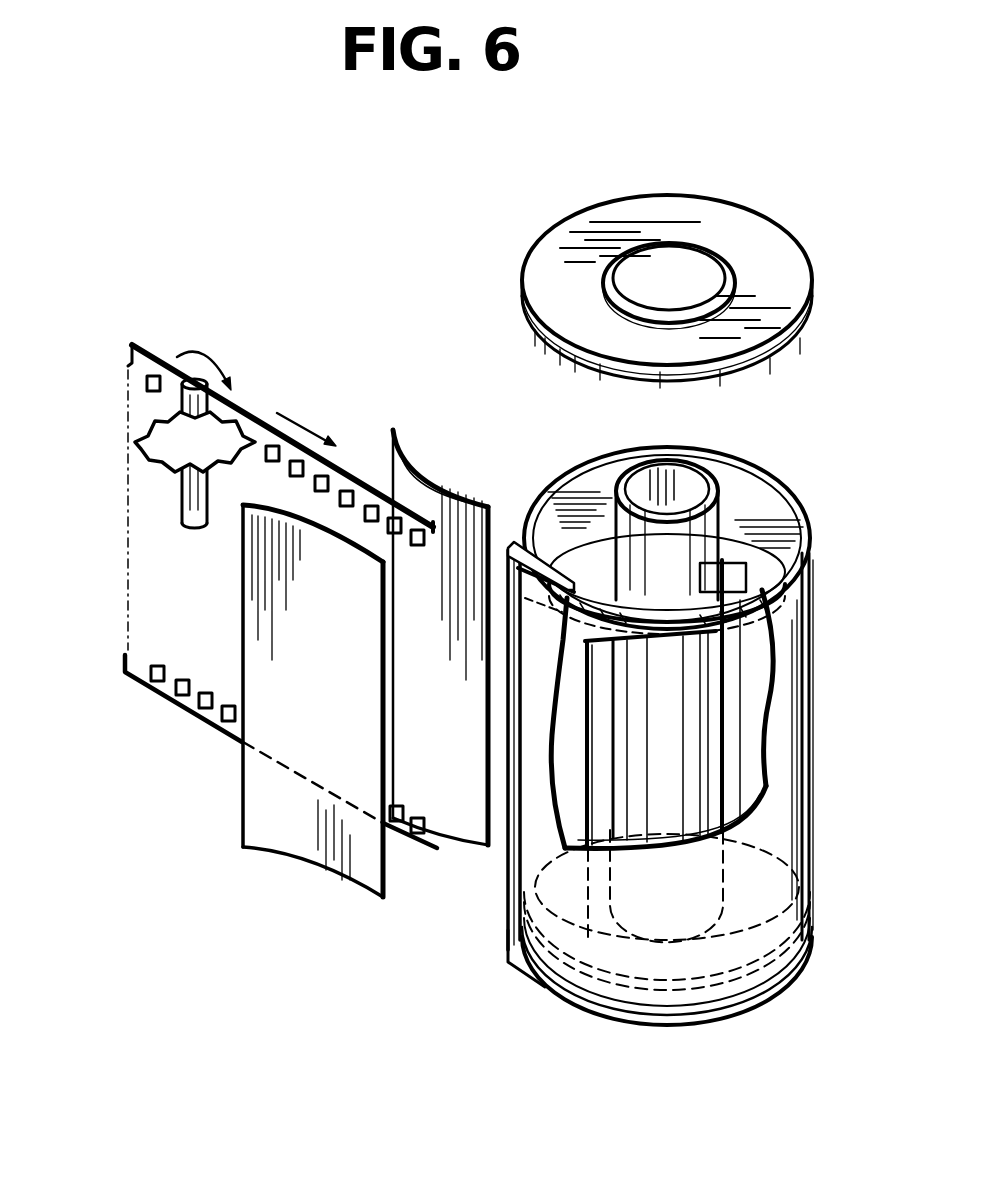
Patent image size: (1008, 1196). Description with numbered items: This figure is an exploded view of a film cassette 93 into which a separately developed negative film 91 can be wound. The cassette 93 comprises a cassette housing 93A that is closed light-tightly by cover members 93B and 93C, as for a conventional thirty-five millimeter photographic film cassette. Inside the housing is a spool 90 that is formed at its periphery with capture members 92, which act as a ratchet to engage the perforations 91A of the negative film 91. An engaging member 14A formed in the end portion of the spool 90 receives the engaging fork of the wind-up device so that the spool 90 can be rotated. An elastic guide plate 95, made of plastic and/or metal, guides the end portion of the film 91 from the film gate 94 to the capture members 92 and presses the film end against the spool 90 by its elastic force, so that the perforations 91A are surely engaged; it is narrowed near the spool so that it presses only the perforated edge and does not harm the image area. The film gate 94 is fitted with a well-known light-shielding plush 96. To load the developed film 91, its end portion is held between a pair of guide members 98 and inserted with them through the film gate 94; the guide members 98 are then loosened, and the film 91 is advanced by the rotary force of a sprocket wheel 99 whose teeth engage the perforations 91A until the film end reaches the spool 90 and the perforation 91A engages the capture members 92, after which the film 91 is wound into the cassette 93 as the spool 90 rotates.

The engaging member 14A is at (700, 462).
The spool 90 is at (742, 474).
The negative film 91 is at (250, 418).
The perforations 91A is at (336, 466).
The capture members 92 is at (600, 598).
The cassette 93 is at (822, 812).
The cassette housing 93A is at (785, 730).
The cover member 93B is at (812, 318).
The cover member 93C is at (792, 982).
The film gate 94 is at (508, 532).
The elastic guide plate 95 is at (690, 612).
The light-shielding plush 96 is at (530, 545).
The guide members 98 is at (473, 842).
The sprocket wheel 99 is at (170, 470).